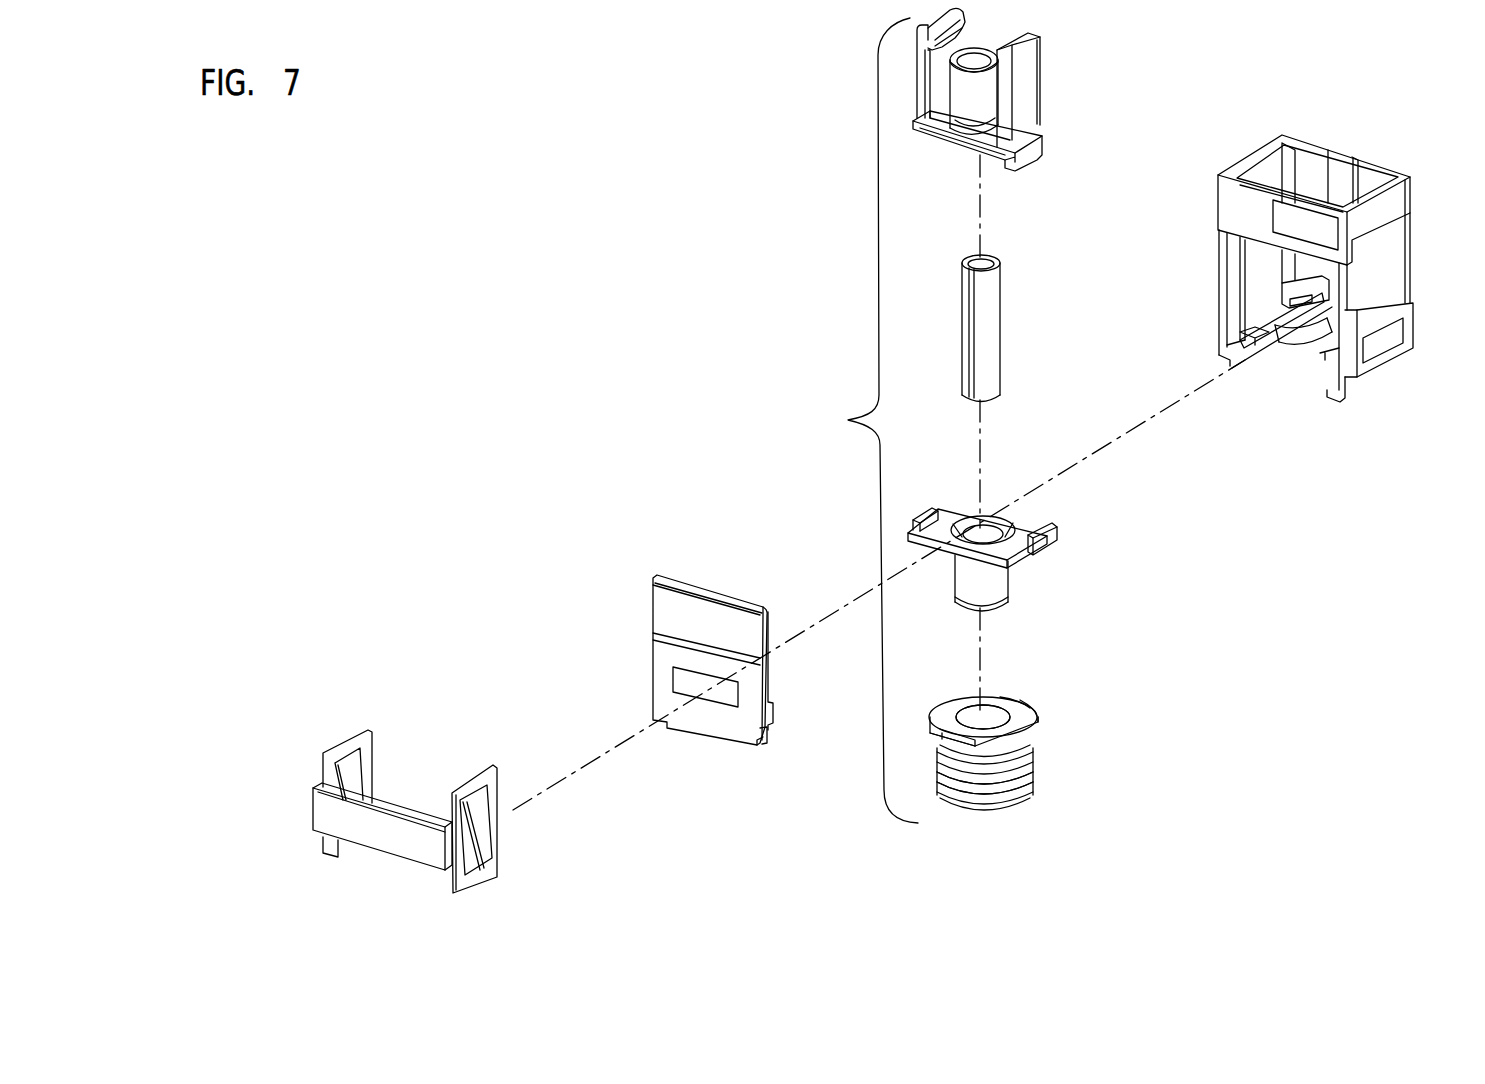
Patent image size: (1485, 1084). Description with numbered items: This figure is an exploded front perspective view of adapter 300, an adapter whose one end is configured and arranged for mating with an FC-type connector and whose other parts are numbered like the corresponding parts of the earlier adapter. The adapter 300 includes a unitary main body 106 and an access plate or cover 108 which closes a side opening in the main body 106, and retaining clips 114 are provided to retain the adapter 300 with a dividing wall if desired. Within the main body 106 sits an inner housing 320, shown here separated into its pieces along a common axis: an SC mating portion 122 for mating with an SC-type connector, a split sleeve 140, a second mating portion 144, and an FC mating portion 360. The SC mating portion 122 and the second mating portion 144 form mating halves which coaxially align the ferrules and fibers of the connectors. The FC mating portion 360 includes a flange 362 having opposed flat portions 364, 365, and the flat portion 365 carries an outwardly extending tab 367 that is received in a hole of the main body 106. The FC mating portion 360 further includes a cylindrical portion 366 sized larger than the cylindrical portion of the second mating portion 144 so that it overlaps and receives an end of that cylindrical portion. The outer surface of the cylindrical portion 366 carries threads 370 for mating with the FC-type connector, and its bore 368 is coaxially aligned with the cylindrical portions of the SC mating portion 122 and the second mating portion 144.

The adapter 300 is at (688, 443).
The inner housing 320 is at (863, 420).
The SC mating portion 122 is at (1028, 102).
The split sleeve 140 is at (993, 347).
The second mating portion 144 is at (1003, 580).
The FC mating portion 360 is at (1035, 752).
The flange 362 is at (1040, 722).
The flat portion 364 is at (955, 742).
The flat portion 365 is at (1030, 702).
The cylindrical portion 366 is at (1032, 783).
The outwardly extending tab 367 is at (1013, 697).
The bore 368 is at (968, 712).
The threads 370 is at (1010, 790).
The access plate or cover 108 is at (703, 727).
The retaining clips 114 is at (490, 840).
The main body 106 is at (1247, 158).